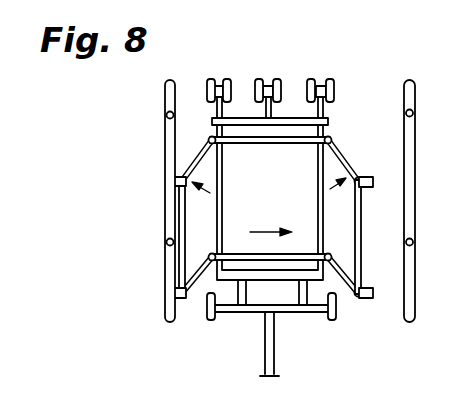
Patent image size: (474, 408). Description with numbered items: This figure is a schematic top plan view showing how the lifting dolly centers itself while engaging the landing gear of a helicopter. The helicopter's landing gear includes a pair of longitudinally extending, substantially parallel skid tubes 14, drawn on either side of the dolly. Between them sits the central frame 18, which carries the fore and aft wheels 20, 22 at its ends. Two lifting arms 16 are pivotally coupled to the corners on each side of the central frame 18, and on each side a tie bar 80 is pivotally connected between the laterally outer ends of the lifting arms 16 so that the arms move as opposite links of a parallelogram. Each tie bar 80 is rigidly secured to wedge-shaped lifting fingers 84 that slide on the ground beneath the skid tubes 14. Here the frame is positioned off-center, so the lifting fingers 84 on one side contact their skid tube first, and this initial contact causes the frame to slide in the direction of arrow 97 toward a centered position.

The skid tubes 14 is at (168, 165).
The lifting arms 16 is at (188, 155).
The central frame 18 is at (333, 128).
The fore wheels 20 is at (210, 320).
The aft wheels 22 is at (233, 84).
The tie bar 80 is at (182, 218).
The lifting fingers 84 is at (364, 180).
The arrow 97 is at (262, 230).